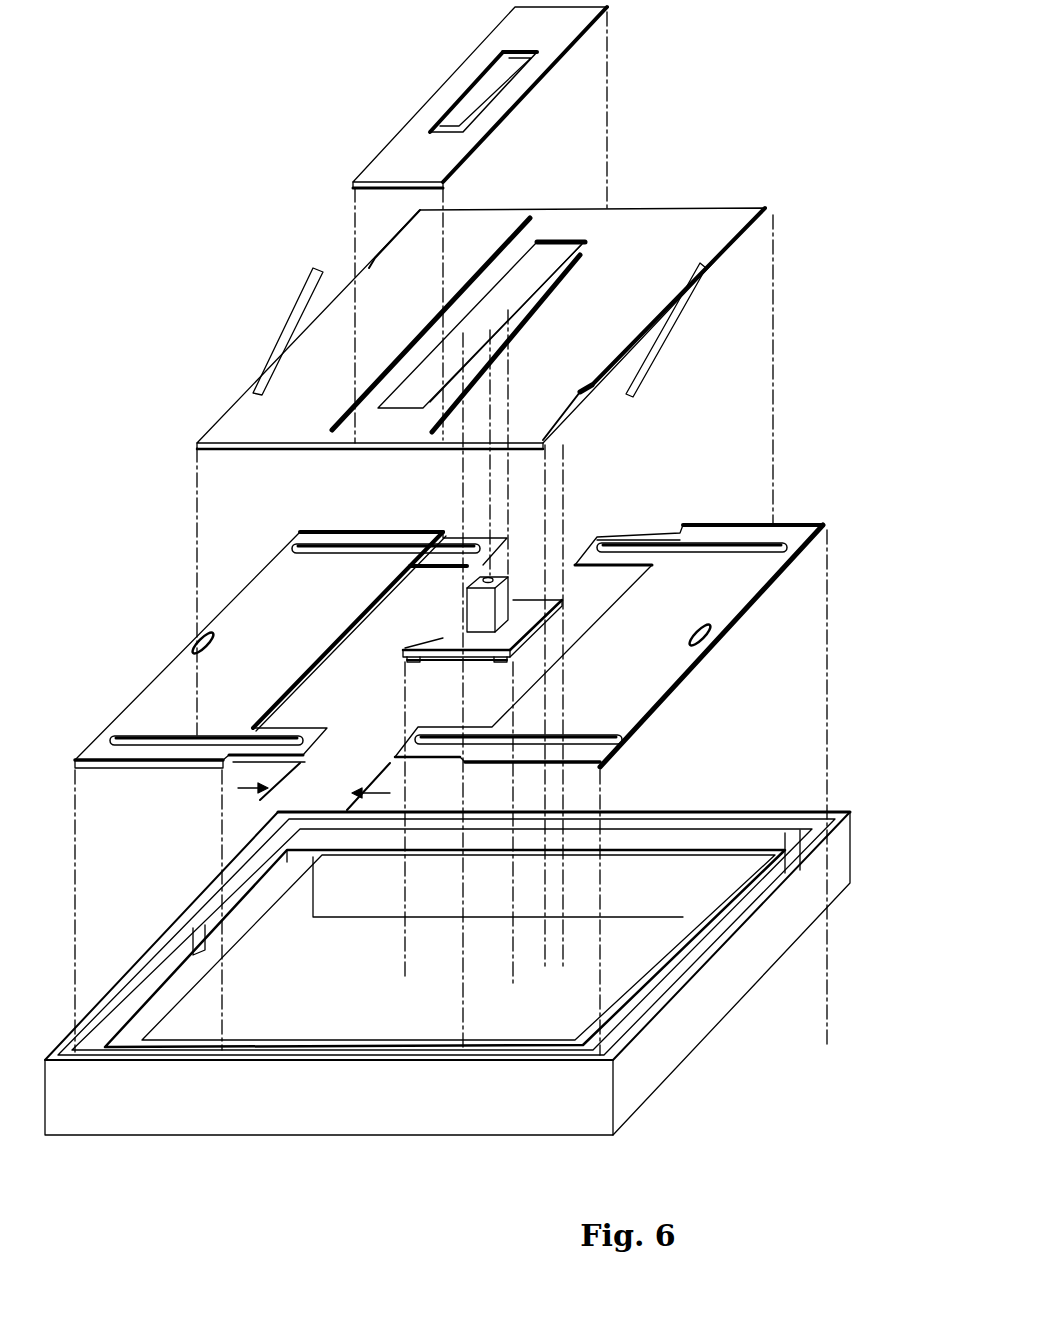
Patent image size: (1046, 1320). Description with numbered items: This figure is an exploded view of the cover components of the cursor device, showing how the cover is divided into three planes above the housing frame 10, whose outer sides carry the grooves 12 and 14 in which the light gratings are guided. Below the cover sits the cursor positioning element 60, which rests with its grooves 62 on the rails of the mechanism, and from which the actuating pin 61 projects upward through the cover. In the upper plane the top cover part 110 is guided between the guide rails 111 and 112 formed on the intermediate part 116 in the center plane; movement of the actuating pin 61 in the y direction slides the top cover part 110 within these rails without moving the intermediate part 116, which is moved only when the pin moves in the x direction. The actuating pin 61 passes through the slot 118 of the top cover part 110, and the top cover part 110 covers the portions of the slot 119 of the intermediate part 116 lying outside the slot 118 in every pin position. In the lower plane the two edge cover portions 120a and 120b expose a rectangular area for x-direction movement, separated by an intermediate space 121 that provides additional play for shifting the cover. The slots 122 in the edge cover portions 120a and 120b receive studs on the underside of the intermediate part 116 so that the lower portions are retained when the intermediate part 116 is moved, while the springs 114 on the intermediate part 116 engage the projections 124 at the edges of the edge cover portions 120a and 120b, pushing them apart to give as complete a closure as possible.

The housing frame 10 is at (440, 949).
The groove 12 is at (673, 840).
The groove 14 is at (197, 933).
The cursor positioning element 60 is at (449, 648).
The actuating pin 61 is at (478, 612).
The grooves 62 is at (500, 658).
The top cover part 110 is at (509, 95).
The guide rail 111 is at (528, 215).
The guide rail 112 is at (592, 250).
The springs 114 is at (292, 320).
The intermediate part 116 is at (477, 288).
The slot 118 is at (430, 133).
The slot 119 is at (372, 403).
The edge cover portion 120a is at (183, 680).
The edge cover portion 120b is at (790, 533).
The intermediate space 121 is at (314, 786).
The slots 122 is at (310, 545).
The projections 124 is at (703, 653).